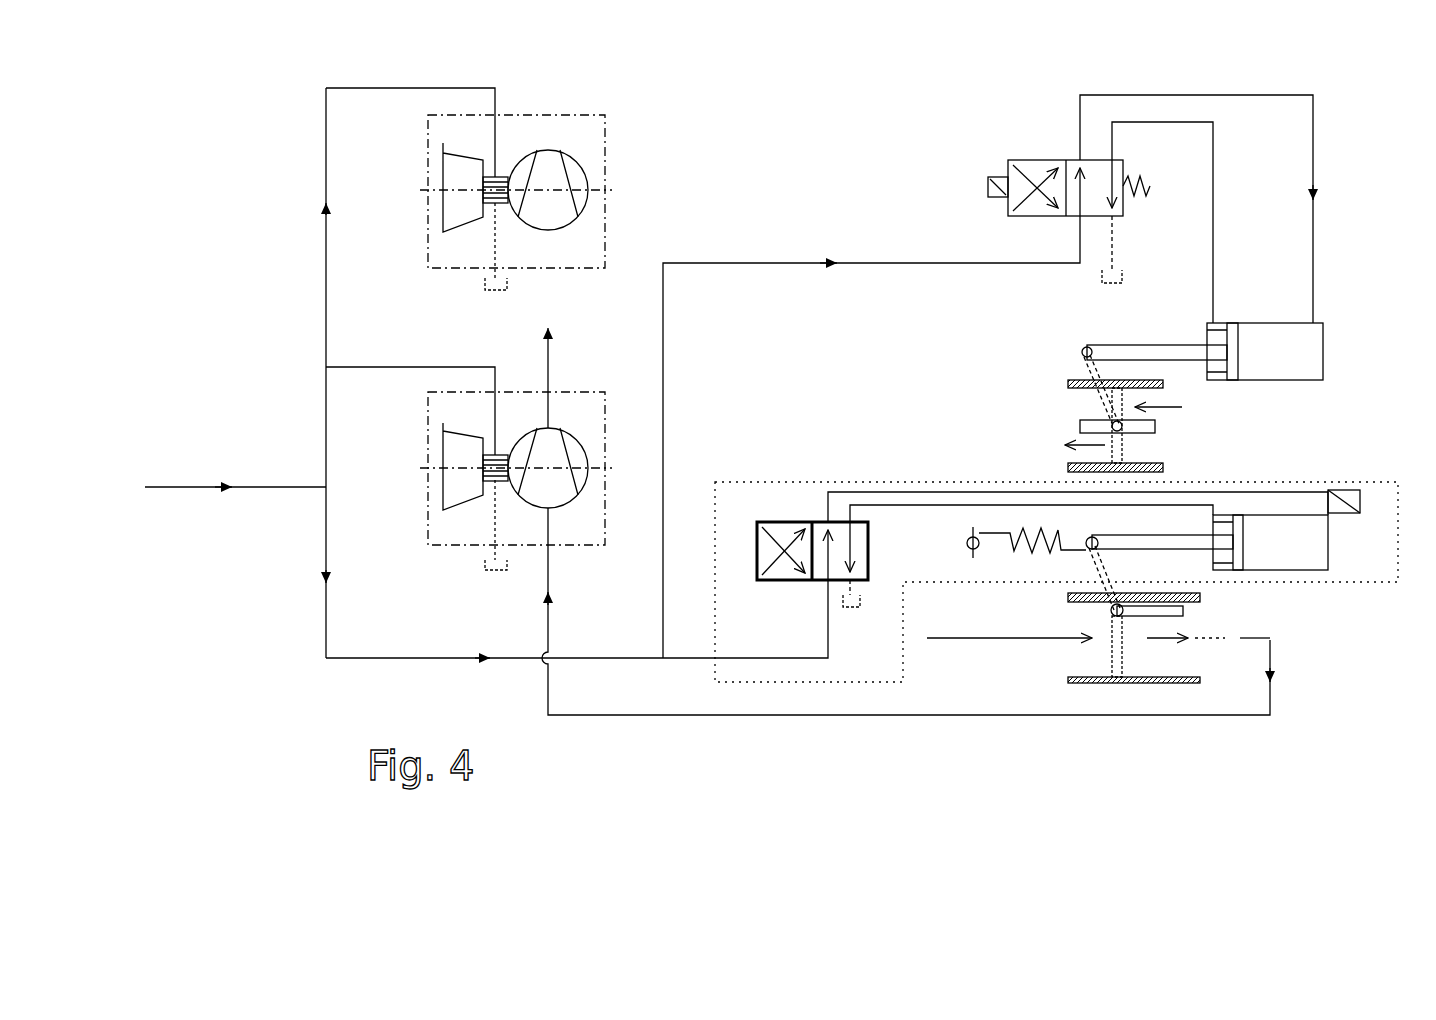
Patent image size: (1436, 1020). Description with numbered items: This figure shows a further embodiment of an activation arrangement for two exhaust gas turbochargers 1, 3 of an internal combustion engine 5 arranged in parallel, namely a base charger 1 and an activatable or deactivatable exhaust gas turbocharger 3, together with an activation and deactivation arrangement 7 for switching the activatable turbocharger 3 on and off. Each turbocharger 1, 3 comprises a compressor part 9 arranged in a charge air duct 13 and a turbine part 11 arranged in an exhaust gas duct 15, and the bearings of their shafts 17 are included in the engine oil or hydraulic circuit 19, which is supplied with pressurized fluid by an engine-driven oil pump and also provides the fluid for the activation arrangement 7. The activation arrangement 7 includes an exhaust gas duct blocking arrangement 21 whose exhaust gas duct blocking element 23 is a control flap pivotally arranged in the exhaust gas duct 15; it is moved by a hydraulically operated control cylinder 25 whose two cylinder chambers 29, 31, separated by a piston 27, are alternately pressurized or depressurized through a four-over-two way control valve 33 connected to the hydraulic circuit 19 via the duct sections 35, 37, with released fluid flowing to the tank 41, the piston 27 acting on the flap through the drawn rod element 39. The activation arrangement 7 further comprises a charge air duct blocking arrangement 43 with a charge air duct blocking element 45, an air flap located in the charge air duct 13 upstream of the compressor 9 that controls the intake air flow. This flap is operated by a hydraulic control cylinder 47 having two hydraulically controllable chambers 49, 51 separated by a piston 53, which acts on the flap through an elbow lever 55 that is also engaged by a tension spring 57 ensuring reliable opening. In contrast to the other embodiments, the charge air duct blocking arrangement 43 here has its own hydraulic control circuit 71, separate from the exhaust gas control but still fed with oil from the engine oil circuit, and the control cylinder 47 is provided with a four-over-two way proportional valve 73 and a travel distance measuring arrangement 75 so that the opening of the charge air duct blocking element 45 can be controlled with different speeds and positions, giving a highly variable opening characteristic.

The base charger 1 is at (585, 145).
The activatable exhaust gas turbocharger 3 is at (455, 528).
The internal combustion engine 5 is at (981, 316).
The activation and deactivation arrangement 7 is at (872, 312).
The compressor part 9 is at (578, 180).
The turbine part 11 is at (452, 213).
The charge air duct 13 is at (965, 713).
The exhaust gas duct 15 is at (1145, 453).
The shaft 17 is at (483, 185).
The hydraulic circuit 19 is at (755, 262).
The exhaust gas duct blocking arrangement 21 is at (1199, 374).
The exhaust gas duct blocking element 23 is at (1085, 428).
The hydraulically operated control cylinder 25 is at (1325, 320).
The piston 27 is at (1232, 322).
The cylinder chamber 29 is at (1312, 370).
The cylinder chamber 31 is at (1215, 372).
The control valve 33 is at (1010, 152).
The duct section 35 is at (1213, 240).
The duct section 37 is at (1316, 200).
The piston rod 39 is at (1113, 350).
The tank 41 is at (487, 288).
The charge air duct blocking arrangement 43 is at (945, 480).
The charge air duct blocking element 45 is at (1185, 612).
The hydraulic control cylinder 47 is at (1305, 533).
The cylinder chamber 49 is at (1222, 562).
The cylinder chamber 51 is at (1315, 558).
The piston 53 is at (1245, 520).
The elbow lever 55 is at (1137, 545).
The tension spring 57 is at (1012, 552).
The hydraulic control circuit 71 is at (773, 658).
The proportional valve 73 is at (785, 592).
The travel distance measuring arrangement 75 is at (1365, 483).